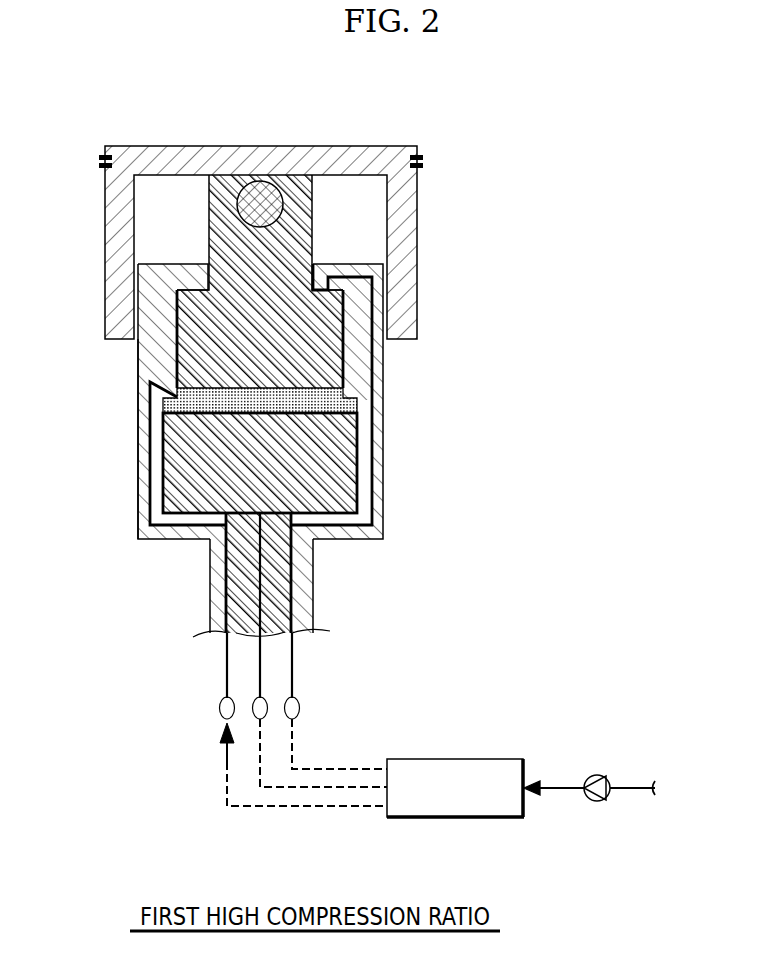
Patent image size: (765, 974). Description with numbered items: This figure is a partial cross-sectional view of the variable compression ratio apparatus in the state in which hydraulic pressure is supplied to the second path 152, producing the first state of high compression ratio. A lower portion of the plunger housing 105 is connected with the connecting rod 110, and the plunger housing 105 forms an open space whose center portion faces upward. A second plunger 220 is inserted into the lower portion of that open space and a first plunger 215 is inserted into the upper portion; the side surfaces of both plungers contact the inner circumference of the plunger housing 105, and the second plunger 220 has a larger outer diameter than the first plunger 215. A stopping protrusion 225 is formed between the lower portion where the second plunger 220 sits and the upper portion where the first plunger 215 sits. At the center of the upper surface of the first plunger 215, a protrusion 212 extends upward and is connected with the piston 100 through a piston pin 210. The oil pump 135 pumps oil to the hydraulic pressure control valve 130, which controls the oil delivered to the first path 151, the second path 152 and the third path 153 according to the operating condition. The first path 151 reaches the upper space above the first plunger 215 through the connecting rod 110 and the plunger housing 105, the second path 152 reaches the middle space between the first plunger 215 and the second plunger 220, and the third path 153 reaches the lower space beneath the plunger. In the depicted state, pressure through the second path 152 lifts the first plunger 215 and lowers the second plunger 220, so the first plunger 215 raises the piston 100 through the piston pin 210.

The piston 100 is at (352, 161).
The plunger housing 105 is at (157, 368).
The connecting rod 110 is at (302, 593).
The hydraulic pressure control valve 130 is at (453, 818).
The oil pump 135 is at (597, 801).
The first path 151 is at (292, 672).
The second path 152 is at (227, 683).
The third path 153 is at (258, 660).
The piston pin 210 is at (260, 190).
The protrusion 212 is at (300, 238).
The first plunger 215 is at (313, 370).
The second plunger 220 is at (338, 477).
The stopping protrusion 225 is at (357, 409).